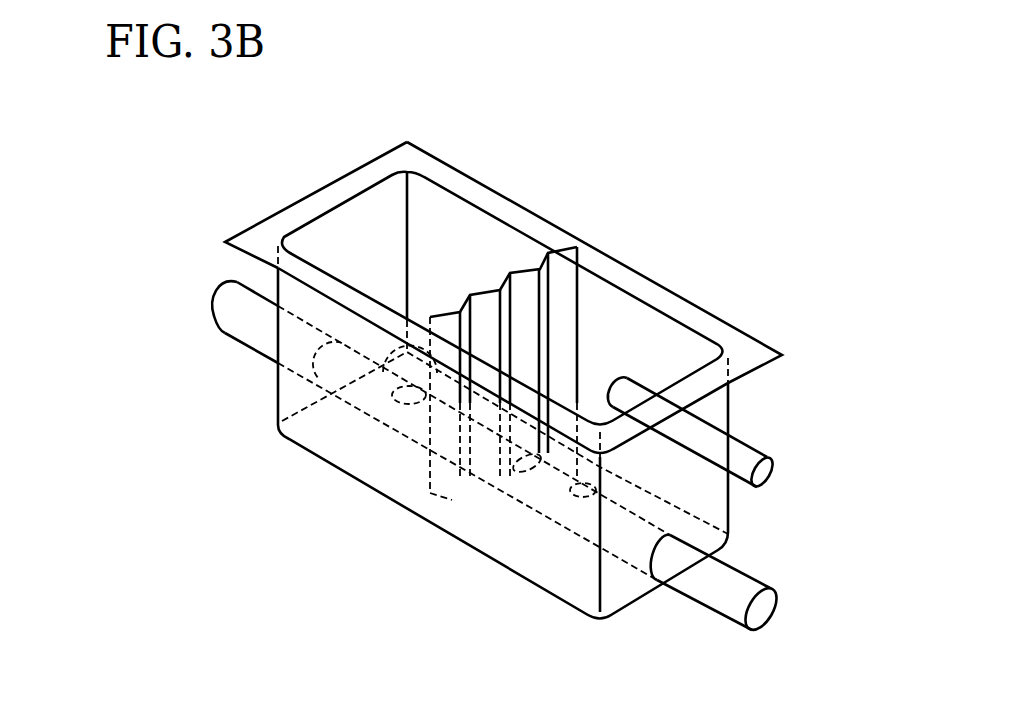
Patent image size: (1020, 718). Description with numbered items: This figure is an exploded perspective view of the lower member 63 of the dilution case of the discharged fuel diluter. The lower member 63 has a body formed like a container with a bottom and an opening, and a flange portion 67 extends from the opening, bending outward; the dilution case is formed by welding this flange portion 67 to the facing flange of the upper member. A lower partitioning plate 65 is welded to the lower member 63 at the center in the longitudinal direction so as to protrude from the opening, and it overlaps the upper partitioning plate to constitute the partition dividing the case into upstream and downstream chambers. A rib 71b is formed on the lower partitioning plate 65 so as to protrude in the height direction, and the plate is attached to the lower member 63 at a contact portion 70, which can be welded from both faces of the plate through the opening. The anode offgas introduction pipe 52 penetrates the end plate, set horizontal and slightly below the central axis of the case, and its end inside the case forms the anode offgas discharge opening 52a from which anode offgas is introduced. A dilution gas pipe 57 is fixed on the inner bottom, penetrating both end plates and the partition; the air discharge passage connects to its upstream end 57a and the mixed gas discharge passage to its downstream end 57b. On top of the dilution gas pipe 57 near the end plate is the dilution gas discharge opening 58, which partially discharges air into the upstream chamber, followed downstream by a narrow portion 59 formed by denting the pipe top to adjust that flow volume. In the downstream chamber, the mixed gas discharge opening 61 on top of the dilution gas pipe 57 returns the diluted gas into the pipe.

The anode offgas introduction pipe 52 is at (750, 445).
The anode offgas discharge opening 52a is at (572, 307).
The dilution gas pipe 57 is at (540, 520).
The upstream end 57a is at (710, 612).
The downstream end 57b is at (238, 341).
The dilution gas discharge opening 58 is at (585, 498).
The narrow portion 59 is at (537, 470).
The mixed gas discharge opening 61 is at (404, 400).
The lower member 63 is at (663, 282).
The lower partitioning plate 65 is at (540, 268).
The flange portion 67 is at (758, 345).
The contact portion 70 is at (420, 499).
The rib 71b is at (540, 287).